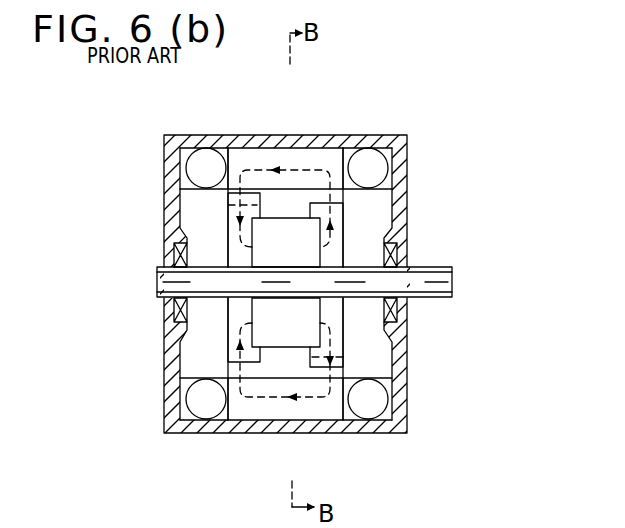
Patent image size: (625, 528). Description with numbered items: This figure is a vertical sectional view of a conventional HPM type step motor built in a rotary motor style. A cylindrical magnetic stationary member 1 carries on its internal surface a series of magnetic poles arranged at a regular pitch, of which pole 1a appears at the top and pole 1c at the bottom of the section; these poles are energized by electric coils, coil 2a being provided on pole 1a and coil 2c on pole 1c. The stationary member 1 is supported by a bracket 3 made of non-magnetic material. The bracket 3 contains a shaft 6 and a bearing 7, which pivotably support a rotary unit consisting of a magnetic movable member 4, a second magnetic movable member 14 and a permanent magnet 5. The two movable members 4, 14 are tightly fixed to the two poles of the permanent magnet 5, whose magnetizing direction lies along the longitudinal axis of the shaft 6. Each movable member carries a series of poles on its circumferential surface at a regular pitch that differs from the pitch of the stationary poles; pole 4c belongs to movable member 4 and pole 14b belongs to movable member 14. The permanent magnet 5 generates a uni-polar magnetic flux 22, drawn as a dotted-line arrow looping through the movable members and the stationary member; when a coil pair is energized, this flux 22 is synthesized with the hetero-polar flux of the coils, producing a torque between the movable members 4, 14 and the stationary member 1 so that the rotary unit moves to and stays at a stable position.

The magnetic stationary member 1 is at (316, 136).
The magnetic pole 1a is at (253, 154).
The magnetic pole 1c is at (327, 410).
The electric coil 2a is at (206, 158).
The electric coil 2c is at (206, 406).
The bracket 3 is at (171, 193).
The magnetic movable member 4 is at (337, 332).
The pole 4c is at (343, 367).
The permanent magnet 5 is at (312, 302).
The shaft 6 is at (453, 272).
The bearing 7 is at (173, 249).
The magnetic movable member 14 is at (238, 310).
The pole 14b is at (230, 193).
The magnetic flux 22 is at (281, 152).